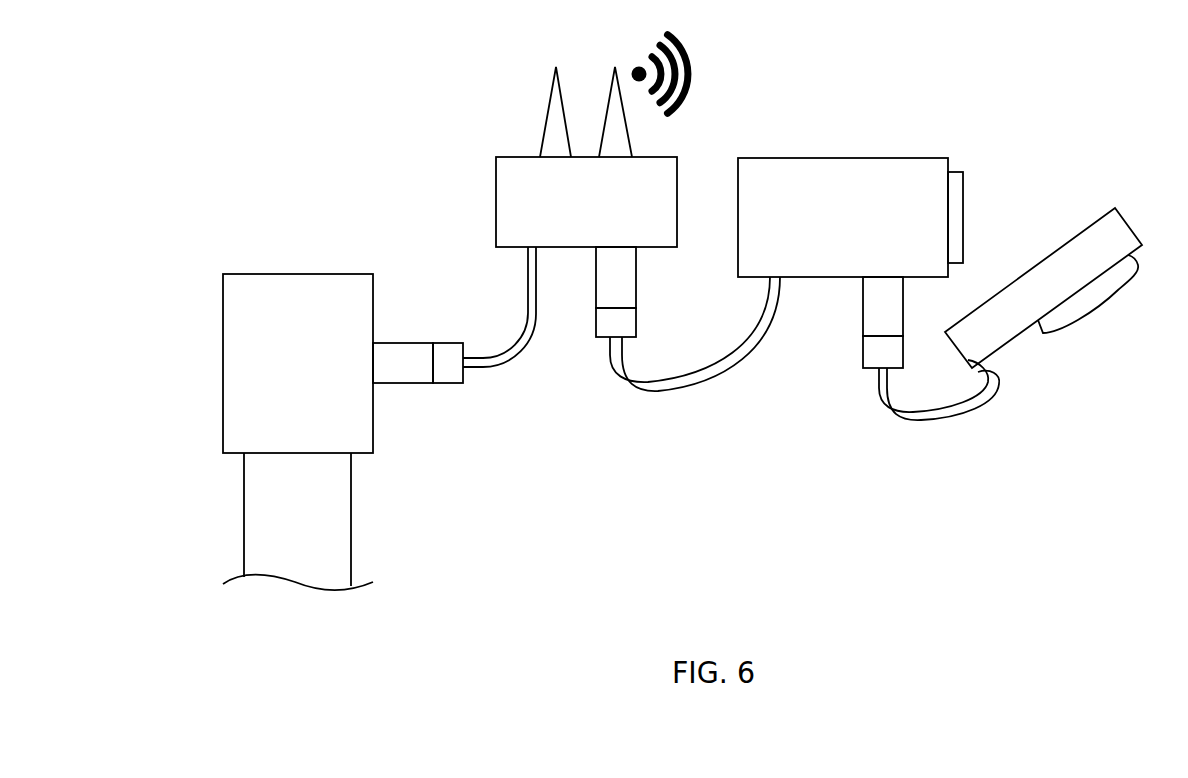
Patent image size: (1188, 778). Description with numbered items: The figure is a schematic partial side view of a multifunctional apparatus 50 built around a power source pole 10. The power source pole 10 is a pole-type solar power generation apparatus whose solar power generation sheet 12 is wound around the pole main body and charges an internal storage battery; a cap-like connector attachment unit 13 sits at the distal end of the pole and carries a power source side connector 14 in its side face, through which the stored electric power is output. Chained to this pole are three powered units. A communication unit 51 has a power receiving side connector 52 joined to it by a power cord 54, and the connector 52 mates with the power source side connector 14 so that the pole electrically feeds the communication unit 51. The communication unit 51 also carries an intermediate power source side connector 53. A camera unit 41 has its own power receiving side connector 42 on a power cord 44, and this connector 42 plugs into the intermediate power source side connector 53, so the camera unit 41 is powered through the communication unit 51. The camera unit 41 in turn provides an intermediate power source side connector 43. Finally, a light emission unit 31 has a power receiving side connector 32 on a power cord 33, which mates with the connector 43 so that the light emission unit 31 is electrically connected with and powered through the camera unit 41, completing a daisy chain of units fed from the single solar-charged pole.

The multifunctional apparatus 50 is at (300, 117).
The power source pole 10 is at (257, 270).
The solar power generation sheet 12 is at (335, 522).
The connector attachment unit 13 is at (230, 369).
The power source side connector 14 is at (402, 353).
The power receiving side connector 52 is at (448, 352).
The power cord 54 is at (516, 350).
The communication unit 51 is at (520, 165).
The intermediate power source side connector 53 is at (623, 270).
The power receiving side connector 42 is at (623, 320).
The power cord 44 is at (707, 376).
The camera unit 41 is at (838, 175).
The intermediate power source side connector 43 is at (873, 313).
The power receiving side connector 32 is at (873, 353).
The power cord 33 is at (945, 415).
The light emission unit 31 is at (1115, 235).